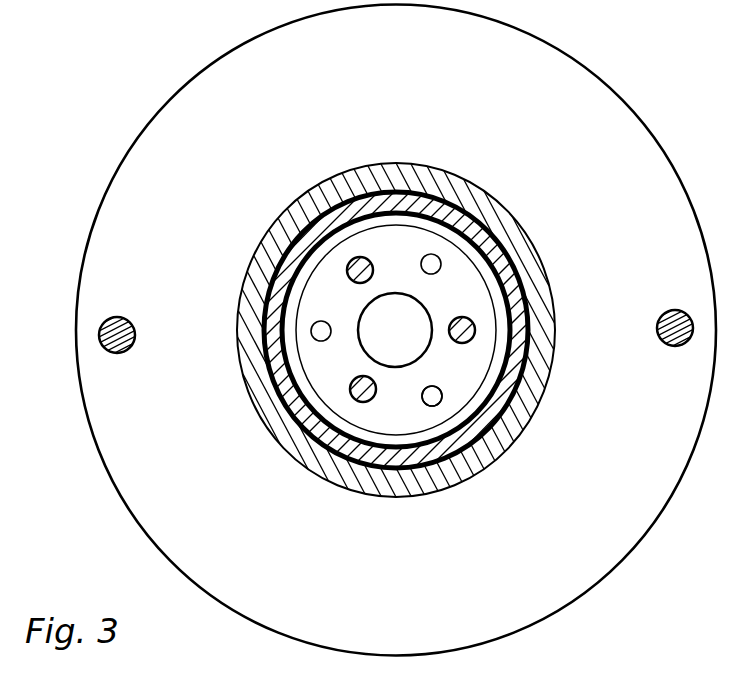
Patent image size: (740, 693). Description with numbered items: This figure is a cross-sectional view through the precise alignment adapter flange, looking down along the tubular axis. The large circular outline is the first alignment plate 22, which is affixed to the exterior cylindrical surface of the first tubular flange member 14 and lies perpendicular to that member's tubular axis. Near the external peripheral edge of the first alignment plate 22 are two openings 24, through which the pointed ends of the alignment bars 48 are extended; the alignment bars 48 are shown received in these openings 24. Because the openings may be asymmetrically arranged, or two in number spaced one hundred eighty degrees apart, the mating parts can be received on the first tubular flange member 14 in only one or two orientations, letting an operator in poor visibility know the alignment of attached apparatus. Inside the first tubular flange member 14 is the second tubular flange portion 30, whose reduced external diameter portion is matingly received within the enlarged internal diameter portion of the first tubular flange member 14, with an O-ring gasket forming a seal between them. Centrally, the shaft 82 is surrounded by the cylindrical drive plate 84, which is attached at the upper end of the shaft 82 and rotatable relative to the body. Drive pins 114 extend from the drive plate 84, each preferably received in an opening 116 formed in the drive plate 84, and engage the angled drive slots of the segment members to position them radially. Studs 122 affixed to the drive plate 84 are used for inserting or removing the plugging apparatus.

The first alignment plate 22 is at (321, 90).
The first tubular flange member 14 is at (430, 177).
The second tubular flange portion 30 is at (494, 248).
The drive plate 84 is at (337, 305).
The shaft 82 is at (408, 328).
The drive pin 114 is at (424, 257).
The stud 122 is at (372, 277).
The opening 116 is at (437, 402).
The opening 24 is at (130, 348).
The alignment bar 48 is at (120, 318).